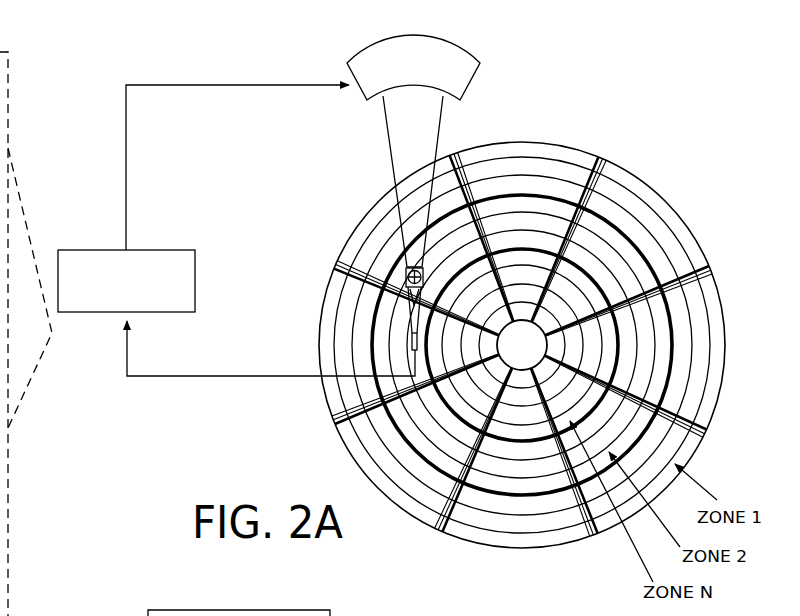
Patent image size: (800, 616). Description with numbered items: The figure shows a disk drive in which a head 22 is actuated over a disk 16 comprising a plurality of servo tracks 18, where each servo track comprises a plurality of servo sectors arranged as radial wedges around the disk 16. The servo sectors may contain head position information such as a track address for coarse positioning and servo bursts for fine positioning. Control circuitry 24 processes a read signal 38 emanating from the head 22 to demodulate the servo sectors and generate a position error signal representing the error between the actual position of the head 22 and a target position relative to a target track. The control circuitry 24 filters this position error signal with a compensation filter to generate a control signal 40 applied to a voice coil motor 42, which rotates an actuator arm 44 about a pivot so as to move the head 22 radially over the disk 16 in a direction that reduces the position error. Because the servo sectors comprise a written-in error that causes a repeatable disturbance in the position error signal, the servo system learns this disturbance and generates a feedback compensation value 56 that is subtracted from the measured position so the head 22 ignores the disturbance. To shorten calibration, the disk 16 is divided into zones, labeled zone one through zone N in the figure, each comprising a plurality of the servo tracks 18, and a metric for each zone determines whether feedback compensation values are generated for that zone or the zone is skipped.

The disk 16 is at (677, 187).
The servo tracks 18 is at (520, 167).
The head 22 is at (403, 355).
The control circuitry 24 is at (165, 249).
The read signal 38 is at (217, 377).
The control signal 40 is at (126, 155).
The voice coil motor 42 is at (362, 93).
The actuator arm 44 is at (398, 166).
The feedback compensation value 56 is at (232, 610).